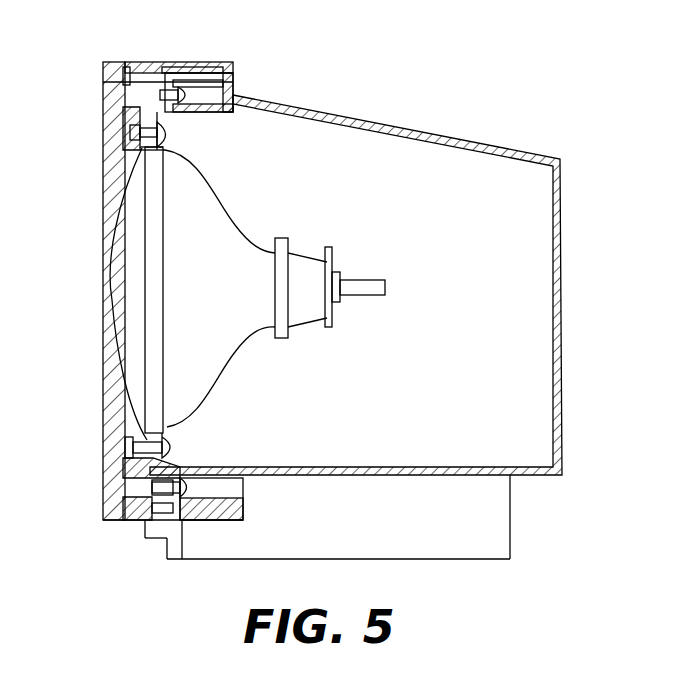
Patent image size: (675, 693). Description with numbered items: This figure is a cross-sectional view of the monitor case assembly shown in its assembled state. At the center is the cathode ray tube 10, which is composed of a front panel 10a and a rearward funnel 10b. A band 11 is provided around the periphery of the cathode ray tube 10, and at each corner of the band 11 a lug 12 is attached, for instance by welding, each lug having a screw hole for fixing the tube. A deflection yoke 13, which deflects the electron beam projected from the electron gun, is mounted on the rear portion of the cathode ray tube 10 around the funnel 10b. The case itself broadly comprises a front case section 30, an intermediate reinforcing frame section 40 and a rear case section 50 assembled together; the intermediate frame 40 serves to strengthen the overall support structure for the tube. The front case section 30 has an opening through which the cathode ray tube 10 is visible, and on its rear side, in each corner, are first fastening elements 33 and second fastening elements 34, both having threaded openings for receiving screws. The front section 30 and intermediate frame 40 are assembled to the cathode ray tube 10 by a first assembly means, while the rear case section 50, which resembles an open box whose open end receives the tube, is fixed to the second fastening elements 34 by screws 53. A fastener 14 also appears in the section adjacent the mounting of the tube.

The cathode ray tube 10 is at (248, 190).
The panel 10a is at (125, 323).
The funnel 10b is at (230, 335).
The band 11 is at (157, 227).
The lug 12 is at (176, 452).
The deflection yoke 13 is at (297, 303).
The upper bolt 14 is at (167, 143).
The front case section 30 is at (113, 74).
The first fastening element 33 is at (112, 124).
The second fastening element 34 is at (134, 85).
The intermediate reinforcing frame section 40 is at (234, 80).
The rear case section 50 is at (450, 142).
The screw 53 is at (182, 98).